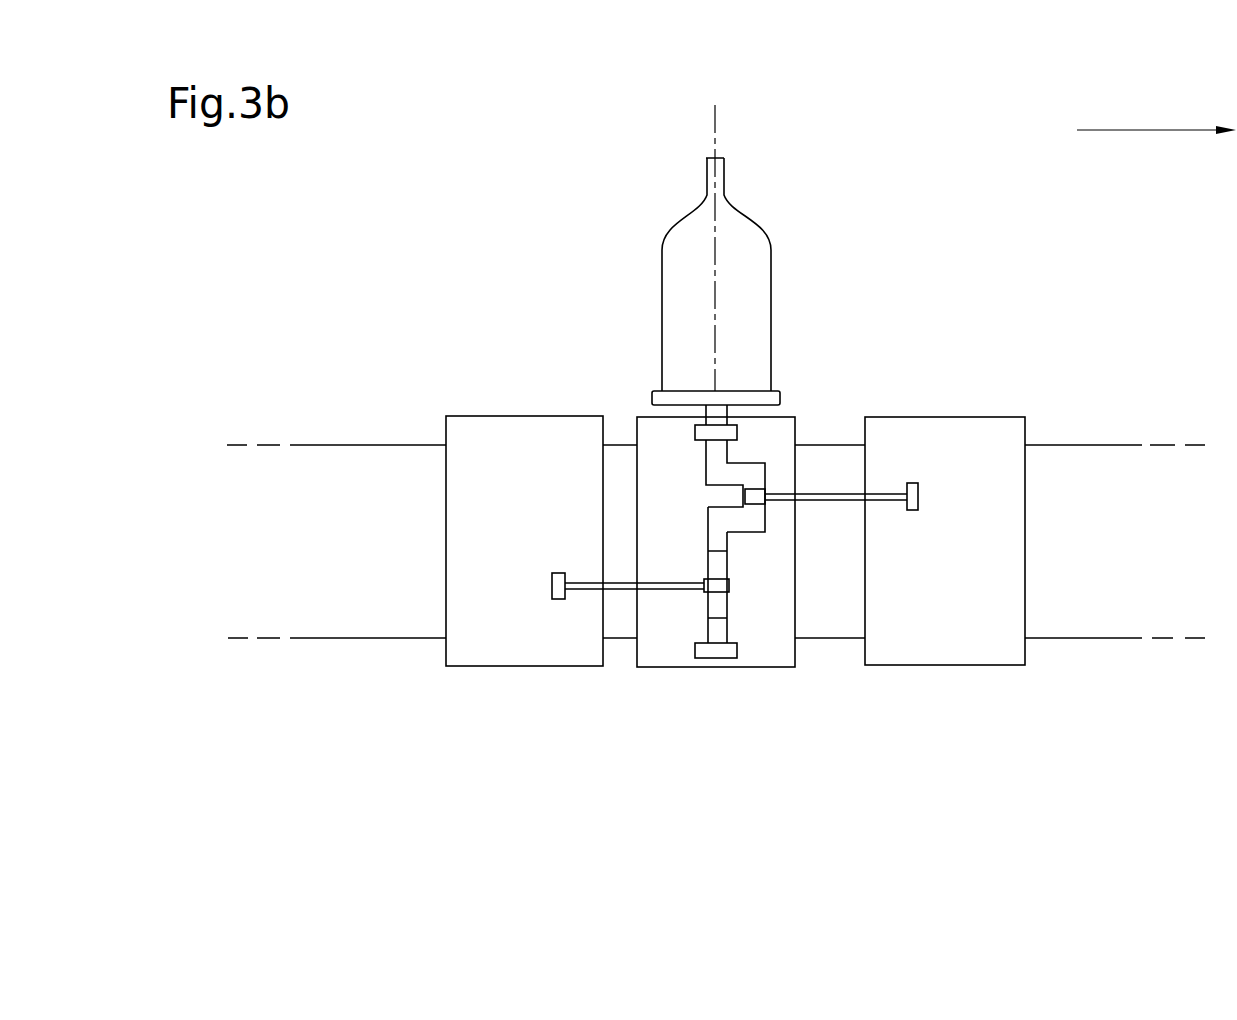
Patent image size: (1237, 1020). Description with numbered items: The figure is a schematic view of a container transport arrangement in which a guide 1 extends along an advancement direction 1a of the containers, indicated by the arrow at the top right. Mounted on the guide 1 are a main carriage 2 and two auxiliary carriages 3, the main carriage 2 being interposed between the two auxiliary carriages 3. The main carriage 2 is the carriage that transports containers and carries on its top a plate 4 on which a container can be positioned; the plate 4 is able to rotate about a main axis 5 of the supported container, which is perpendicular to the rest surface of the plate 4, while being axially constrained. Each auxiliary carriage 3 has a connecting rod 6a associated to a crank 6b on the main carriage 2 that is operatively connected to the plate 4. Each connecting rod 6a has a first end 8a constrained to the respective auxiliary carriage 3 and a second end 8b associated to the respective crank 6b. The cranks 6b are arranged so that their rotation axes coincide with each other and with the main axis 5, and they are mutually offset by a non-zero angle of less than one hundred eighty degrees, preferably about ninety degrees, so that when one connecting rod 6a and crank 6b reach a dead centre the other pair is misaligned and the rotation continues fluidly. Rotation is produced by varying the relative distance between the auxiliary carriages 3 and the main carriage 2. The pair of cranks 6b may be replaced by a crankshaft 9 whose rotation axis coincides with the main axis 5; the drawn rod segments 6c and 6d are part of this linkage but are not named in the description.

The guide 1 is at (302, 588).
The advancement direction 1a is at (1156, 107).
The main carriage 2 is at (767, 655).
The auxiliary carriage 3 is at (490, 435).
The plate 4 is at (670, 398).
The main axis 5 is at (713, 107).
The connecting rod 6a is at (880, 497).
The crank 6b is at (720, 472).
The left actuating rod 6c is at (600, 588).
The bottom collar 6d is at (740, 655).
The first end 8a is at (552, 583).
The second end 8b is at (797, 494).
The crankshaft 9 is at (717, 537).